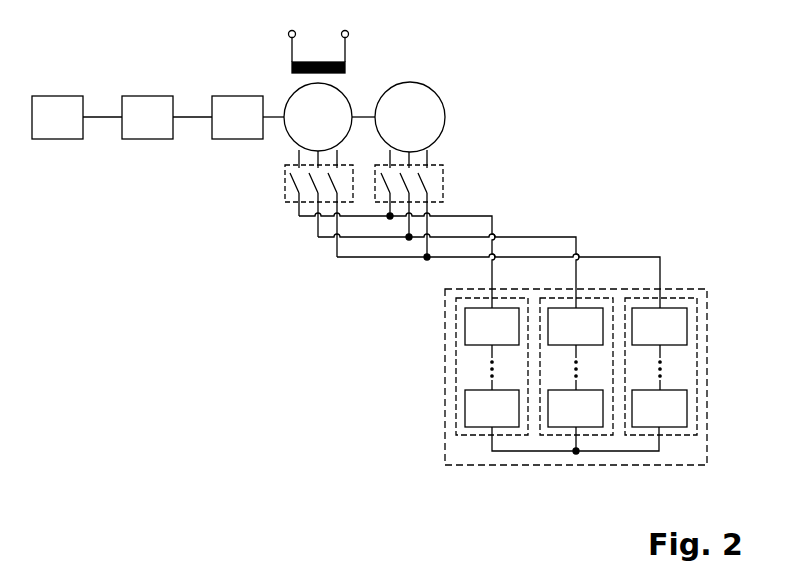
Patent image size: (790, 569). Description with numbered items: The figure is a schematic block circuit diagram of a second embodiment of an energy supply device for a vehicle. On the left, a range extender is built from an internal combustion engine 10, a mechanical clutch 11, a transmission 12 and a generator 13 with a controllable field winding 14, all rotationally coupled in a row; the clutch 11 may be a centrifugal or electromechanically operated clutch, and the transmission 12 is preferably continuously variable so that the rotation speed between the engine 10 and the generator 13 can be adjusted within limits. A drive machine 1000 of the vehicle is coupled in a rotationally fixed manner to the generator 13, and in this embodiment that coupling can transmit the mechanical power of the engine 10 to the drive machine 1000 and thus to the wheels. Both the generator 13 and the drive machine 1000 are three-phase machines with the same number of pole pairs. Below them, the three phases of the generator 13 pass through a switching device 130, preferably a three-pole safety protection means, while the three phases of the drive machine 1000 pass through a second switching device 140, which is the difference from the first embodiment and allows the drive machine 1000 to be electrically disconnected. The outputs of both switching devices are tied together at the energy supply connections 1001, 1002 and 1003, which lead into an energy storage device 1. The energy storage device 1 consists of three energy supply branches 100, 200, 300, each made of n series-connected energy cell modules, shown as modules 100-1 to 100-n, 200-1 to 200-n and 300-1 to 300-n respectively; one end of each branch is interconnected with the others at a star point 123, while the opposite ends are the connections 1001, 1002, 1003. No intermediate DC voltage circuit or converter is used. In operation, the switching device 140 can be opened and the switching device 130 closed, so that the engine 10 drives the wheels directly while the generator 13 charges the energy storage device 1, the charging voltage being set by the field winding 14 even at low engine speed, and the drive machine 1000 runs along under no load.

The energy storage device 1 is at (445, 446).
The internal combustion engine 10 is at (57, 95).
The mechanical clutch 11 is at (147, 95).
The transmission 12 is at (237, 95).
The generator 13 is at (347, 92).
The controllable field winding 14 is at (317, 56).
The drive machine 1000 is at (445, 117).
The switching device 130 is at (285, 189).
The switching device 140 is at (443, 188).
The energy supply connection 1001 is at (390, 219).
The energy supply connection 1002 is at (409, 240).
The energy supply connection 1003 is at (427, 260).
The energy supply branch 100 is at (464, 357).
The energy supply branch 200 is at (566, 367).
The energy supply branch 300 is at (669, 377).
The energy cell module 100-n is at (510, 306).
The energy cell module 200-n is at (592, 306).
The energy cell module 300-n is at (678, 306).
The energy cell module 100-1 is at (465, 415).
The energy cell module 200-1 is at (562, 428).
The energy cell module 300-1 is at (645, 428).
The star point 123 is at (578, 454).